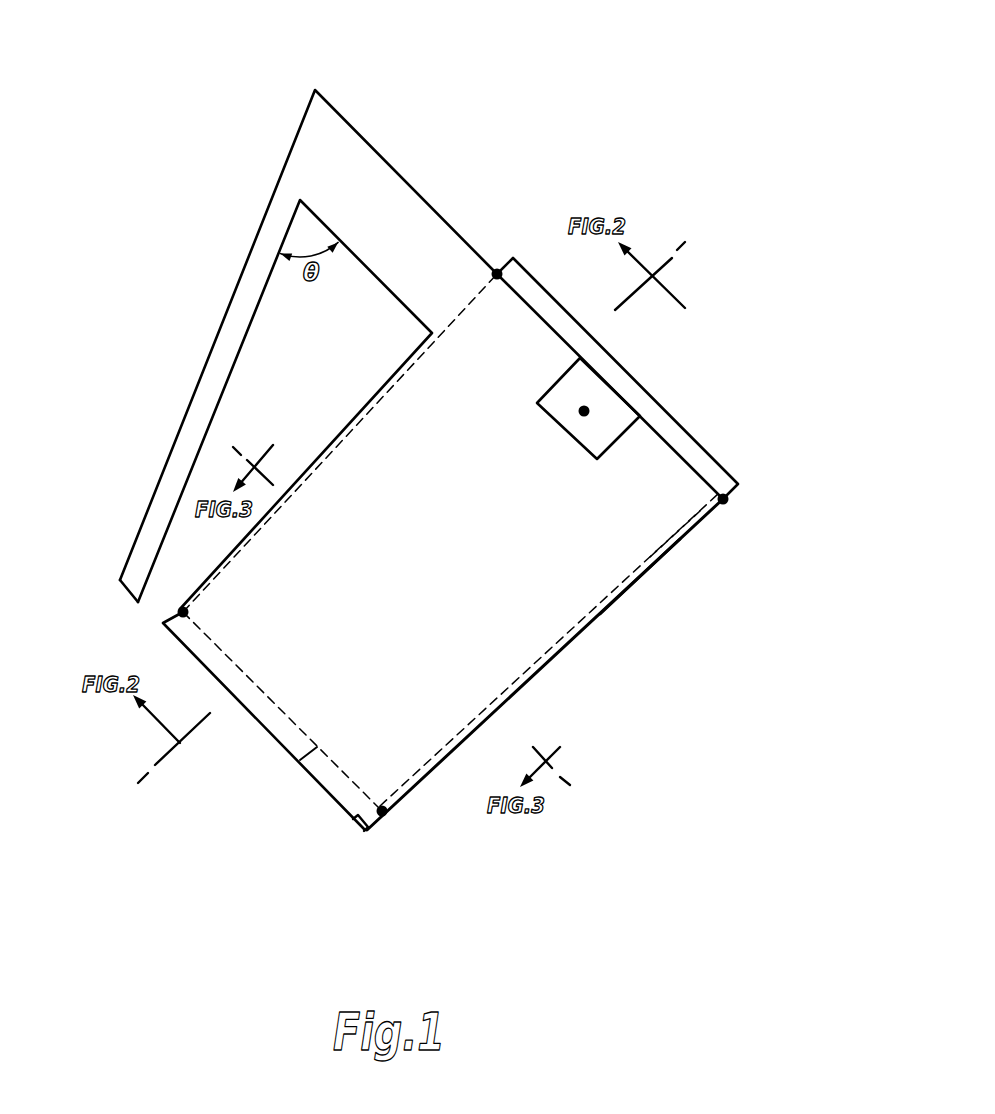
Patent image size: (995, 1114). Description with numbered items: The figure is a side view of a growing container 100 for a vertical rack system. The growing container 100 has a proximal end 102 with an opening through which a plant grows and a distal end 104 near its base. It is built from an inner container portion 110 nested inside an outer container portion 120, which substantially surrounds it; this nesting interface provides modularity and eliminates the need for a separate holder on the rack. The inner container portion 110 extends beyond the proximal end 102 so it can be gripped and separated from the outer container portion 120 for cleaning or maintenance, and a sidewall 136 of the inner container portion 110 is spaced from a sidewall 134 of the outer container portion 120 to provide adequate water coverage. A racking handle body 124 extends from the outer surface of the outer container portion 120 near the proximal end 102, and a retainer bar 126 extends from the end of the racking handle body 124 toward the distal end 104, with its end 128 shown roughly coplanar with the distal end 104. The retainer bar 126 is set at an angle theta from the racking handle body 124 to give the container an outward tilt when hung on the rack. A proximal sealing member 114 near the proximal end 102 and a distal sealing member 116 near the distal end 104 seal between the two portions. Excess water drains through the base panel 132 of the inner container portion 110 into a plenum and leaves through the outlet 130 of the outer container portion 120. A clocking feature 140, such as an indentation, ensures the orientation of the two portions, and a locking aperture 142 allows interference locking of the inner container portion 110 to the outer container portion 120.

The growing container 100 is at (706, 153).
The proximal end 102 is at (690, 430).
The distal end 104 is at (265, 728).
The inner container portion 110 is at (708, 468).
The proximal sealing member 114 is at (497, 272).
The distal sealing member 116 is at (180, 612).
The outer container portion 120 is at (547, 610).
The racking handle body 124 is at (367, 192).
The retainer bar 126 is at (238, 317).
The end of the retainer bar 128 is at (127, 590).
The outlet 130 is at (357, 827).
The base panel 132 is at (300, 764).
The sidewall of the outer container portion 134 is at (642, 587).
The sidewall of the inner container portion 136 is at (667, 540).
The clocking feature 140 is at (580, 383).
The locking aperture 142 is at (586, 408).